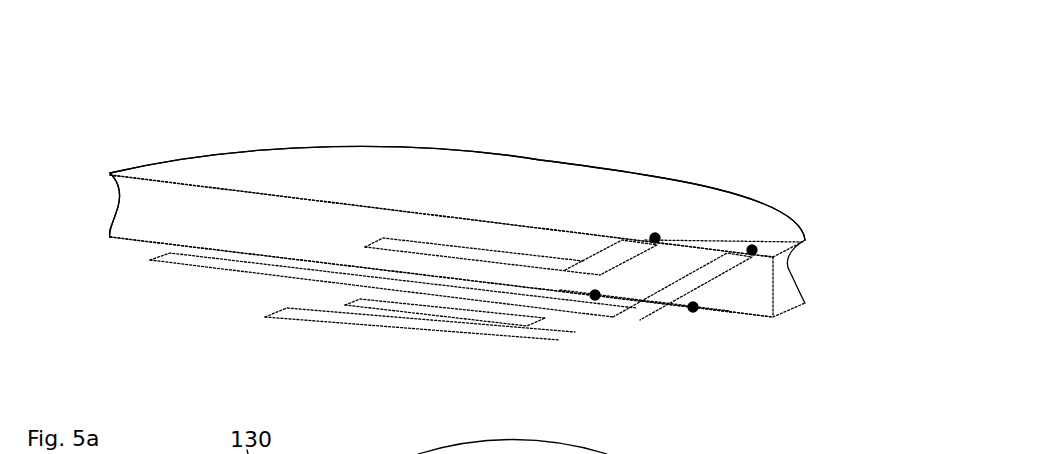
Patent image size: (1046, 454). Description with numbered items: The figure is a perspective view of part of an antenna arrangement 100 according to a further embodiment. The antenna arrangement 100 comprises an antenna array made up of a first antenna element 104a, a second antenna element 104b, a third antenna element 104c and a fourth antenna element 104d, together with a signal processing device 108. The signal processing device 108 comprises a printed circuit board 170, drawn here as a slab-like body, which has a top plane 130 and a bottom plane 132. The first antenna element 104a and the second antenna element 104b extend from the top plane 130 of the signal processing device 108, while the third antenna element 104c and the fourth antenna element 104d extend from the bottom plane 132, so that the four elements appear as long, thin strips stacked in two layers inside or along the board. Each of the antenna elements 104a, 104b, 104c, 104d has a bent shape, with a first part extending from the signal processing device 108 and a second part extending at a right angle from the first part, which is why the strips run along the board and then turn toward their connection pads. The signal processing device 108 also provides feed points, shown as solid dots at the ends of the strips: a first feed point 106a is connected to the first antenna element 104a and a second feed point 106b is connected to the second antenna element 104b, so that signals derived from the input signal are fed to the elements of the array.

The antenna arrangement 100 is at (115, 108).
The signal processing device 108 is at (142, 206).
The top plane 130 is at (288, 168).
The bottom plane 132 is at (137, 243).
The printed circuit board 170 is at (478, 187).
The first antenna element 104a is at (630, 253).
The second antenna element 104b is at (723, 263).
The third antenna element 104c is at (543, 320).
The fourth antenna element 104d is at (283, 317).
The first feed point 106a is at (655, 237).
The second feed point 106b is at (758, 253).